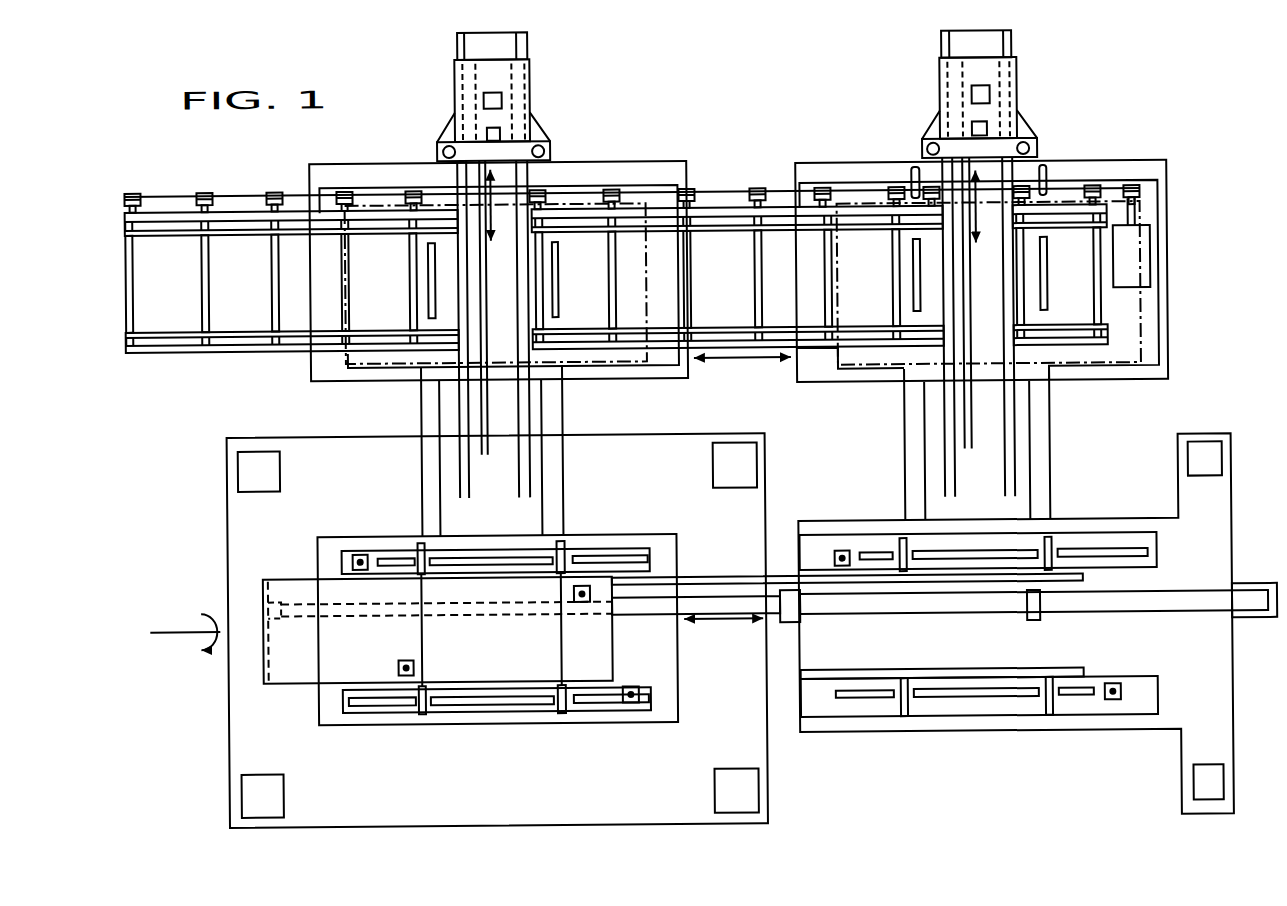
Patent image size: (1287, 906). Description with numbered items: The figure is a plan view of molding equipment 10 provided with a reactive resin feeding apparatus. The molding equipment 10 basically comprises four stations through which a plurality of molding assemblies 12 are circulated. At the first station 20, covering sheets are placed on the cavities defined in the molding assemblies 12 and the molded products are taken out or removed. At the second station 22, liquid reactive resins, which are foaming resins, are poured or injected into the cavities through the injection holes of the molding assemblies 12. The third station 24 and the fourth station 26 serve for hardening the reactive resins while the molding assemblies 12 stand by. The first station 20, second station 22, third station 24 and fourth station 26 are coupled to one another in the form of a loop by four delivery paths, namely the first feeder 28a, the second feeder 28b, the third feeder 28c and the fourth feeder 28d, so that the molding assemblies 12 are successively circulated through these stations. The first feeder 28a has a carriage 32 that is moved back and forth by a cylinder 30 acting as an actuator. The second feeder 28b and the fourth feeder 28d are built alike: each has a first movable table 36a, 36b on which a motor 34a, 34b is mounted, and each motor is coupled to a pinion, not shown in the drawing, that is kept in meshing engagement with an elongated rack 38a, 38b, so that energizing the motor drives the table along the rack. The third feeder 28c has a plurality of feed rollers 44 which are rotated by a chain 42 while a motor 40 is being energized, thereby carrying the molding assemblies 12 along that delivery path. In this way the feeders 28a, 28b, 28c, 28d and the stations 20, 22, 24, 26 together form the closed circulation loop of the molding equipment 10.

The molding equipment 10 is at (806, 84).
The molding assembly 12 is at (651, 297).
The first station 20 is at (230, 712).
The second station 22 is at (1116, 511).
The third station 24 is at (1141, 153).
The fourth station 26 is at (656, 146).
The first feeder 28a is at (781, 712).
The second feeder 28b is at (1048, 485).
The third feeder 28c is at (814, 192).
The fourth feeder 28d is at (554, 456).
The cylinder 30 is at (925, 609).
The carriage 32 is at (302, 674).
The motor 34a is at (988, 105).
The motor 34b is at (503, 96).
The first movable table 36a is at (974, 72).
The first movable table 36b is at (495, 76).
The elongated rack 38a is at (970, 418).
The elongated rack 38b is at (485, 417).
The motor 40 is at (1155, 270).
The chain 42 is at (707, 193).
The feed roller 44 is at (283, 229).